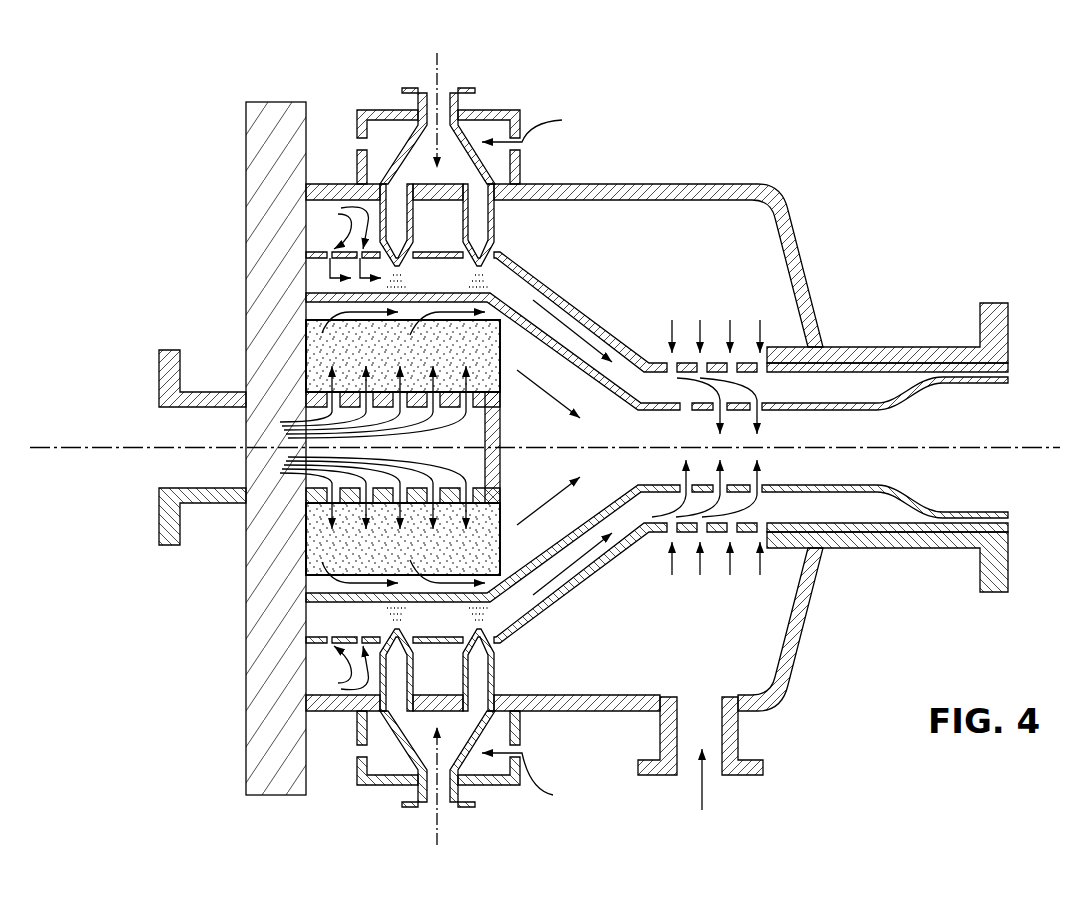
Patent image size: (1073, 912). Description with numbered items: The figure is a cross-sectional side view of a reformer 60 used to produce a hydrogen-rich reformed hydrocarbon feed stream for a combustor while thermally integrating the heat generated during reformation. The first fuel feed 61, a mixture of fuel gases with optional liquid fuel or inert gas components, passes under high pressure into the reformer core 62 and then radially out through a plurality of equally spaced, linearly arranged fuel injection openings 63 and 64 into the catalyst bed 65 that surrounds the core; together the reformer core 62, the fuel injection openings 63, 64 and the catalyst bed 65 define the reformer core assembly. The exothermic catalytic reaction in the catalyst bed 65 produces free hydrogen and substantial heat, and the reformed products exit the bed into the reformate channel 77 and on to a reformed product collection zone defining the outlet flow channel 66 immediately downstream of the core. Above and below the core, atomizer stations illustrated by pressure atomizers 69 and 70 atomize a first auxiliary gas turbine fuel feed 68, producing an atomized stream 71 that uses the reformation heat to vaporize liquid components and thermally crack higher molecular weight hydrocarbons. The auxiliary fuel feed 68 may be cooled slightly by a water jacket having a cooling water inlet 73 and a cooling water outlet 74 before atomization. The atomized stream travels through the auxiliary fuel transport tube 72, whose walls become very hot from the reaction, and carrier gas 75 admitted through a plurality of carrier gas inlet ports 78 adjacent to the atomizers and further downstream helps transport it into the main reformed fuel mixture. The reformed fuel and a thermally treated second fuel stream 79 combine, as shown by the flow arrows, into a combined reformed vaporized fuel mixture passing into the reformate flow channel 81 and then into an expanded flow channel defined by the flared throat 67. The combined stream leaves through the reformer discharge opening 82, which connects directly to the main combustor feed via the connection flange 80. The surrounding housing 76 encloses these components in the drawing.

The reformer 60 is at (122, 330).
The first fuel feed 61 is at (196, 432).
The reformer core 62 is at (482, 444).
The fuel injection openings 63 is at (360, 402).
The fuel injection openings 64 is at (360, 493).
The catalyst bed 65 is at (403, 447).
The outlet flow channel 66 is at (557, 477).
The flared throat 67 is at (943, 384).
The first auxiliary gas turbine fuel feed 68 is at (437, 53).
The pressure atomizer 69 is at (495, 216).
The pressure atomizer 70 is at (394, 213).
The atomized stream 71 is at (405, 288).
The auxiliary fuel transport tube 72 is at (560, 292).
The cooling water inlet 73 is at (535, 455).
The cooling water outlet 74 is at (326, 107).
The carrier gas 75 is at (887, 810).
The outer housing shell 76 is at (793, 618).
The reformate channel 77 is at (313, 311).
The carrier gas inlet ports 78 is at (533, 451).
The thermally treated second fuel stream 79 is at (650, 524).
The connection flange 80 is at (997, 352).
The reformate flow channel 81 is at (850, 444).
The reformer discharge opening 82 is at (1057, 429).